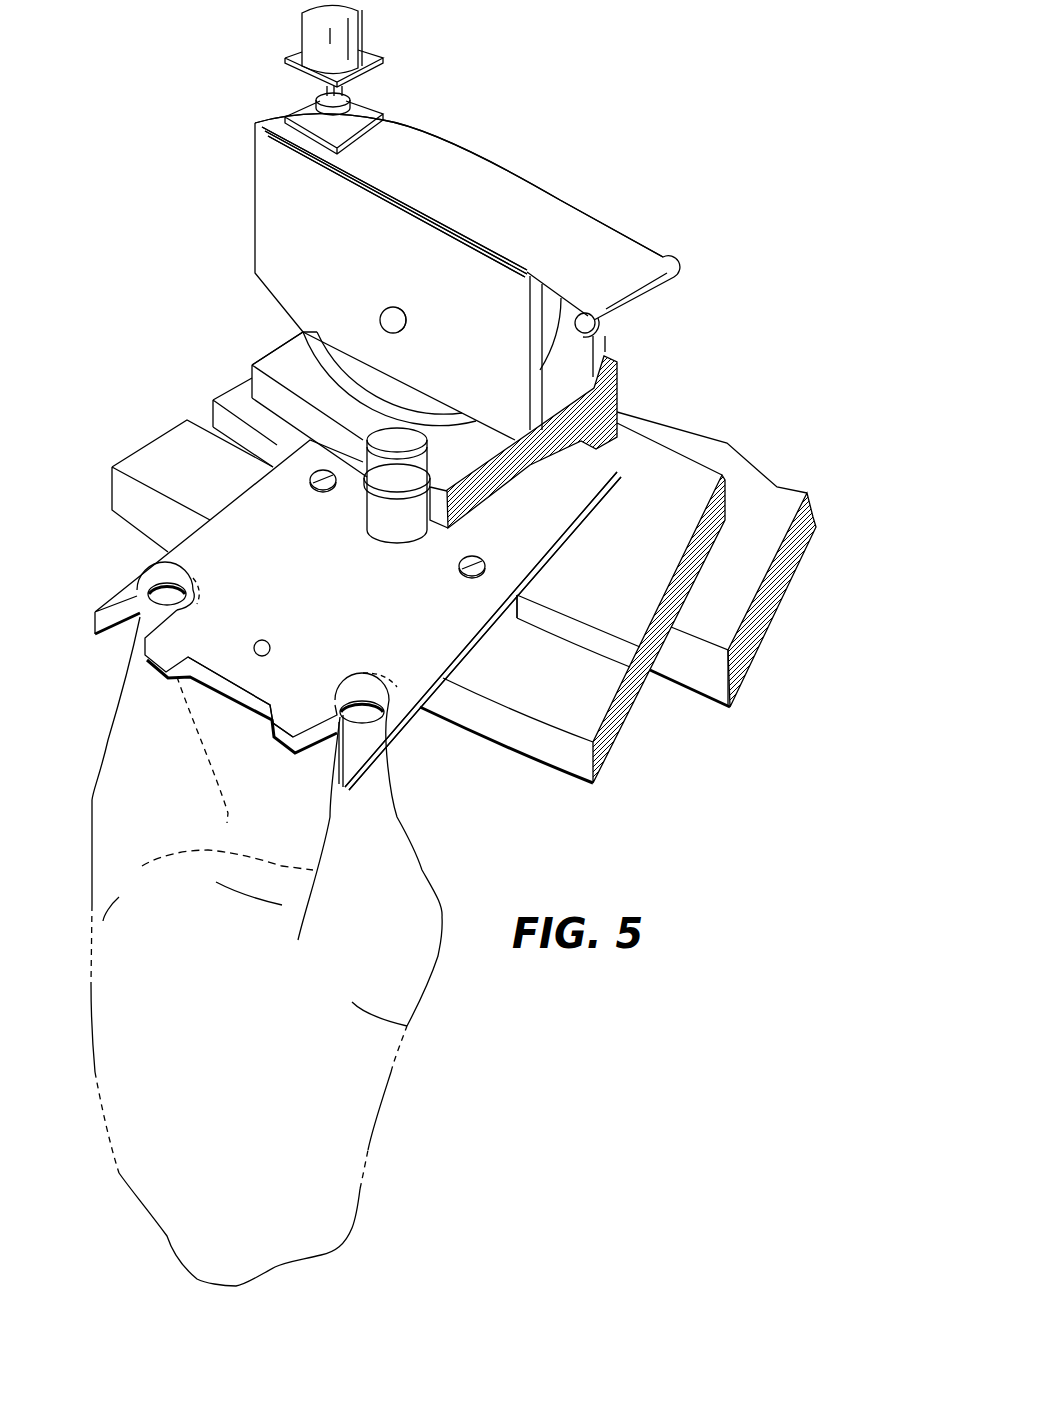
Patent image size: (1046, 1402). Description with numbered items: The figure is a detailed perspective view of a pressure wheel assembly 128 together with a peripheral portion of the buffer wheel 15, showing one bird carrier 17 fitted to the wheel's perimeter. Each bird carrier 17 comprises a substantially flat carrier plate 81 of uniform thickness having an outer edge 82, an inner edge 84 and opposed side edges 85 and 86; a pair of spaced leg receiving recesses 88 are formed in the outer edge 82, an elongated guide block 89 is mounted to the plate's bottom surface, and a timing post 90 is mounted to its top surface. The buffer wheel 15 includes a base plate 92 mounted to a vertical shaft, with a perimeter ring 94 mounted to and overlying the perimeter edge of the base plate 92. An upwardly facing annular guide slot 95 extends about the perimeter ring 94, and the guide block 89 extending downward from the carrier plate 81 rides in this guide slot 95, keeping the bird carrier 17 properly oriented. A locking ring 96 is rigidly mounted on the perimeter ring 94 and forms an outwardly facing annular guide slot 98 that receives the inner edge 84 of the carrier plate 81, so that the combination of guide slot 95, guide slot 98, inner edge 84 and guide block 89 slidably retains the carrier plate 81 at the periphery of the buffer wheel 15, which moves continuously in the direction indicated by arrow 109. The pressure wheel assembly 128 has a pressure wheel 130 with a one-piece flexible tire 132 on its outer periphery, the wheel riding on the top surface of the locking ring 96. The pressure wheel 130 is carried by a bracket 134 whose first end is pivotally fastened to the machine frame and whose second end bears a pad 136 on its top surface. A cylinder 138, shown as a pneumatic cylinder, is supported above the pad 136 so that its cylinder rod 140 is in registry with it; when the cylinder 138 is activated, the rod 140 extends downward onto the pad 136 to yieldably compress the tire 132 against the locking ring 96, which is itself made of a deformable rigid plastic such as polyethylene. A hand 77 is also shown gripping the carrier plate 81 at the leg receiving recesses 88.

The buffer wheel 15 is at (813, 490).
The bird carrier 17 is at (537, 522).
The hand of operator 77 is at (383, 1107).
The carrier plate 81 is at (316, 616).
The outer edge 82 is at (253, 703).
The inner edge 84 is at (612, 452).
The side edge 85 is at (547, 553).
The side edge 86 is at (210, 517).
The leg receiving recesses 88 is at (140, 604).
The guide block 89 is at (520, 617).
The timing post 90 is at (380, 510).
The base plate 92 is at (780, 607).
The perimeter ring 94 is at (690, 480).
The annular guide slot 95 is at (205, 420).
The locking ring 96 is at (288, 355).
The outwardly facing annular guide slot 98 is at (543, 403).
The direction arrow 109 is at (633, 865).
The pressure wheel assembly 128 is at (521, 97).
The pressure wheel 130 is at (396, 382).
The flexible tire 132 is at (310, 332).
The bracket 134 is at (486, 272).
The pad 136 is at (352, 100).
The cylinder 138 is at (363, 30).
The cylinder rod 140 is at (362, 116).